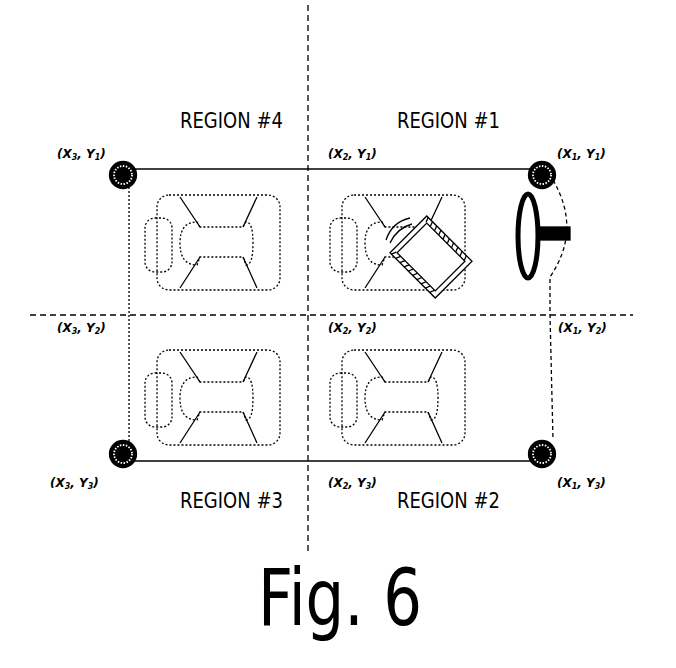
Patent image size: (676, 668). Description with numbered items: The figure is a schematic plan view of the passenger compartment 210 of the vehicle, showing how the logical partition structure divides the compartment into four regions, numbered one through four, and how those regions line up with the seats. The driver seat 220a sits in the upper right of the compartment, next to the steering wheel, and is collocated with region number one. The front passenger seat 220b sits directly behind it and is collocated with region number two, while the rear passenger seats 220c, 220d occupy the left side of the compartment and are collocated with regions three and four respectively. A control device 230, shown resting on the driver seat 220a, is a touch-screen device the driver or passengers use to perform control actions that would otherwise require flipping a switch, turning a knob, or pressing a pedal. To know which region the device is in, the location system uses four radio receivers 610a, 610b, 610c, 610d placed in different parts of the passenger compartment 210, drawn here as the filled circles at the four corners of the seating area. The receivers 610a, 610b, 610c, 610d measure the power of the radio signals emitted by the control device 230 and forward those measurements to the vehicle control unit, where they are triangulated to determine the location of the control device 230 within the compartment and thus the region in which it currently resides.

The passenger compartment 210 is at (138, 215).
The driver seat 220a is at (452, 197).
The front passenger seat 220b is at (465, 417).
The rear passenger seat 220c is at (267, 352).
The rear passenger seat 220d is at (267, 197).
The control device 230 is at (455, 292).
The receiver 610a is at (537, 165).
The receiver 610b is at (535, 467).
The receiver 610c is at (128, 468).
The receiver 610d is at (118, 163).